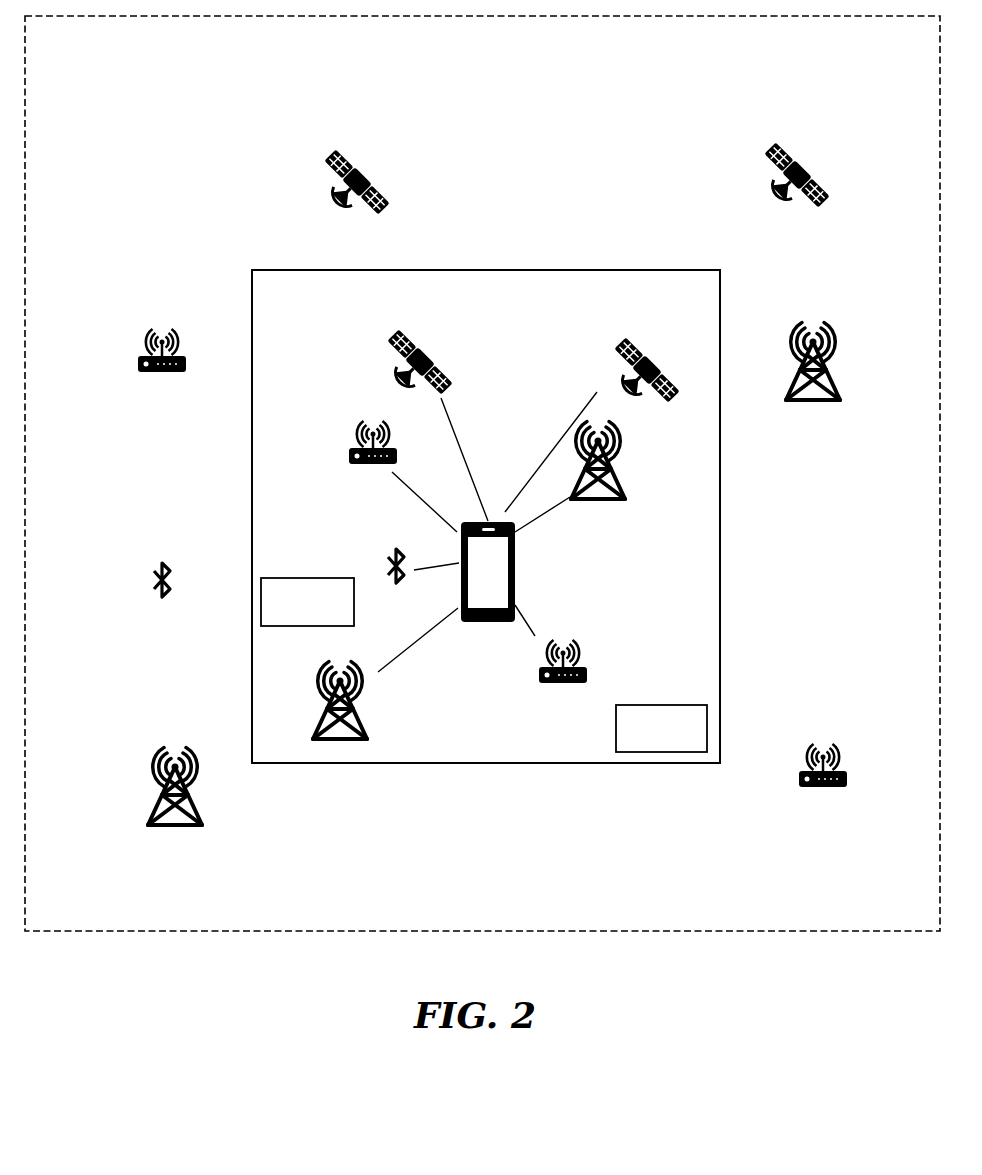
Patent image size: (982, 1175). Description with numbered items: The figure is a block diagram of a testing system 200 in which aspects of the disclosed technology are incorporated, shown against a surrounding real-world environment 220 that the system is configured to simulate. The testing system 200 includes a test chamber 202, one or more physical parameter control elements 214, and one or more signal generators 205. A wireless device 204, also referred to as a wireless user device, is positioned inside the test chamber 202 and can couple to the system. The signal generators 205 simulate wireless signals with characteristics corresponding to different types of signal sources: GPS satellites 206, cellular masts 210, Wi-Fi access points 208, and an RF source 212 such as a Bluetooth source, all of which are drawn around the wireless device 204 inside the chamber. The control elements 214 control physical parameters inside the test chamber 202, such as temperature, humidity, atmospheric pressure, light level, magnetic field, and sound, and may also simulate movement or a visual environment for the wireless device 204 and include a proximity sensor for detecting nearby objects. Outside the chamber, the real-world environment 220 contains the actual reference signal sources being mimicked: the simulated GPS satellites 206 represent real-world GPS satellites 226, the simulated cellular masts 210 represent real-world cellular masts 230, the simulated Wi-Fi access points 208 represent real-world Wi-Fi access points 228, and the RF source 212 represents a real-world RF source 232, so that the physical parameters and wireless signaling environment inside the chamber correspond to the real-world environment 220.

The real-world environment 220 is at (79, 48).
The testing system 200 is at (316, 317).
The test chamber 202 is at (518, 763).
The wireless device 204 is at (515, 568).
The signal generators 205 is at (291, 613).
The GPS satellites 206 is at (610, 332).
The Wi-Fi access points 208 is at (372, 411).
The cellular masts 210 is at (622, 470).
The RF source 212 is at (378, 560).
The physical parameter control elements 214 is at (645, 739).
The GPS satellites 226 is at (322, 170).
The Wi-Fi access points 228 is at (158, 307).
The cellular masts 230 is at (826, 300).
The out-of-range Bluetooth device 232 is at (157, 542).